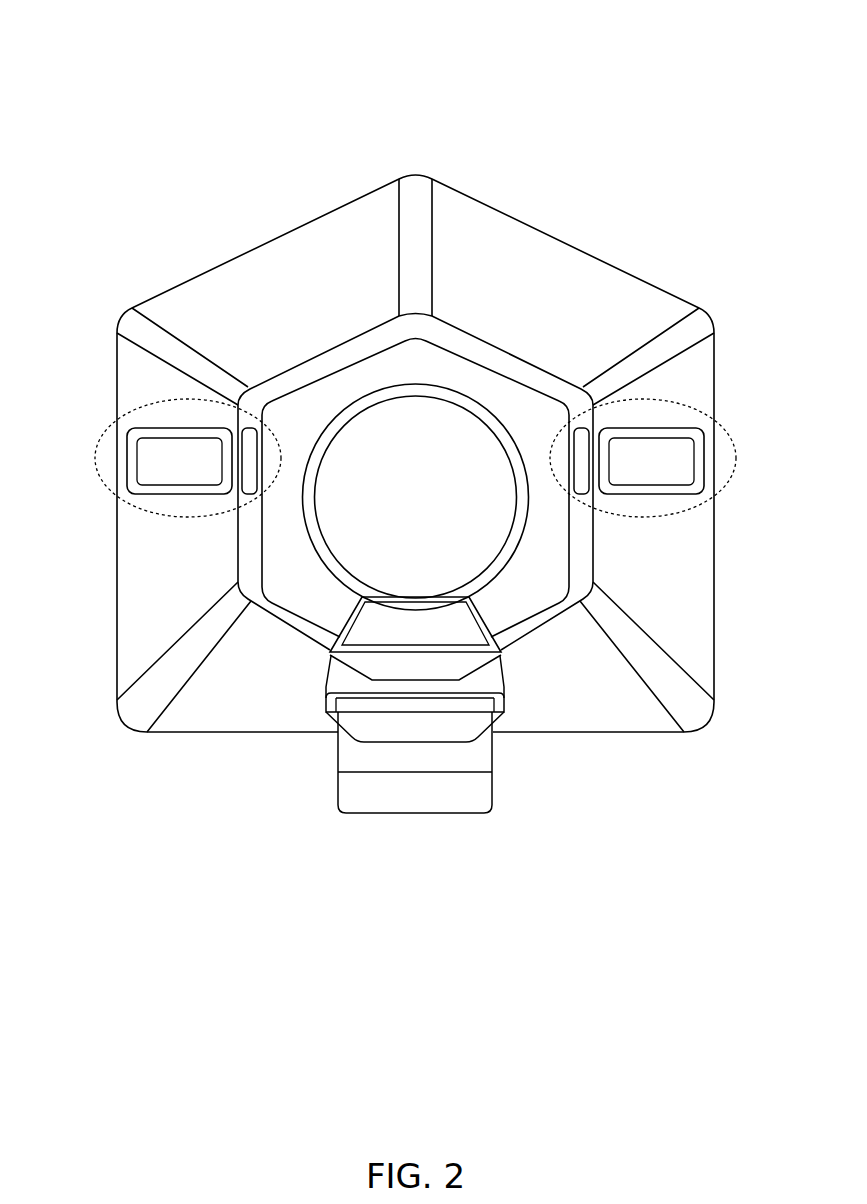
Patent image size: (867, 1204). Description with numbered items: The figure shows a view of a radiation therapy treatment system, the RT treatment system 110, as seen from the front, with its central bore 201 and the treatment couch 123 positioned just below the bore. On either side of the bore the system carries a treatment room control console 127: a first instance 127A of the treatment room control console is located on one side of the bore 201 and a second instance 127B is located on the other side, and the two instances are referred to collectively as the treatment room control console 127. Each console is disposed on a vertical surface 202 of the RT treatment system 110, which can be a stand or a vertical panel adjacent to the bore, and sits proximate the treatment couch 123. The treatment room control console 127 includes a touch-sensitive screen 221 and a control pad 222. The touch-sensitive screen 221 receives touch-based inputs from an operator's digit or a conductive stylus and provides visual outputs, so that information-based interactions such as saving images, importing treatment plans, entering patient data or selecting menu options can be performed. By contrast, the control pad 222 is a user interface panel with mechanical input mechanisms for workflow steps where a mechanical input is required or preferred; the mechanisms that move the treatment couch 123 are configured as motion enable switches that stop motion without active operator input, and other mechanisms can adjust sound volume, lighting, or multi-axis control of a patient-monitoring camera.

The RT treatment system 110 is at (122, 55).
The treatment room control console 127 is at (414, 464).
The first instance of treatment room control console 127A is at (206, 488).
The second instance of treatment room control console 127B is at (621, 520).
The touch-sensitive screen 221 is at (158, 470).
The control pad 222 is at (257, 462).
The bore 201 is at (397, 514).
The treatment couch 123 is at (398, 637).
The vertical surface 202 is at (138, 625).